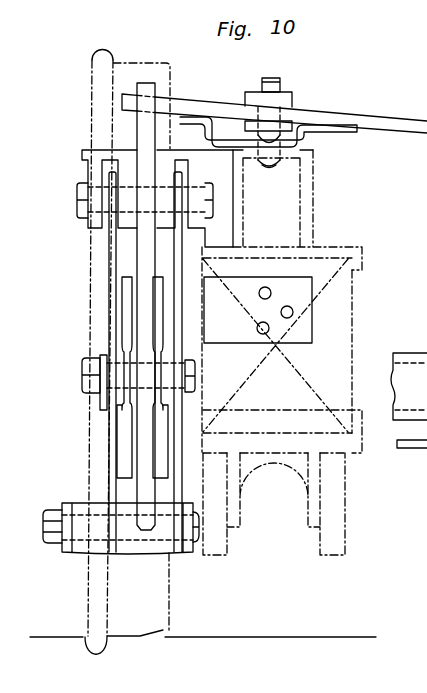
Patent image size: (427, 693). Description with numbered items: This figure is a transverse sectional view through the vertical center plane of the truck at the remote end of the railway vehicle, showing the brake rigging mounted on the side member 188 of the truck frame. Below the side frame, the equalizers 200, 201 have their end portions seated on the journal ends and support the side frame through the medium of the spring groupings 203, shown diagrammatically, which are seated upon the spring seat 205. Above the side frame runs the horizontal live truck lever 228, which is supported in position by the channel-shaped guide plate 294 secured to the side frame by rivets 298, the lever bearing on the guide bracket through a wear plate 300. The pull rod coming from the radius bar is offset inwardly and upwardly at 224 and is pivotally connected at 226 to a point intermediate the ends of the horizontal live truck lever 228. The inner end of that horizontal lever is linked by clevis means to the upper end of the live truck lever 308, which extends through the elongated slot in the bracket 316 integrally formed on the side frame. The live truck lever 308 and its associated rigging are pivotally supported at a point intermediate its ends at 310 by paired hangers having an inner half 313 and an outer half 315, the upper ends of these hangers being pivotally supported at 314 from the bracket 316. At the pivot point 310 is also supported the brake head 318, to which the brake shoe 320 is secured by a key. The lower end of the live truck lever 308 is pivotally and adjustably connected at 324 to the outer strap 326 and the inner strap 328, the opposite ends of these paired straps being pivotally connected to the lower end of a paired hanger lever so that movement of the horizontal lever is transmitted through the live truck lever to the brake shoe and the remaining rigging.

The side member 188 is at (313, 190).
The equalizer 200 is at (340, 532).
The equalizer 201 is at (225, 548).
The spring grouping 203 is at (352, 303).
The spring seat 205 is at (357, 453).
The offset of pull rod 224 is at (288, 96).
The pivotal connection 226 is at (268, 97).
The horizontal live truck lever 228 is at (345, 111).
The channel-shaped guide plate 294 is at (328, 135).
The rivet 298 is at (270, 170).
The wear plate 300 is at (379, 146).
The live truck lever 308 is at (137, 118).
The pivot point 310 is at (82, 370).
The inner half of paired hangers 313 is at (107, 242).
The pivotal support 314 is at (82, 200).
The outer half of paired hangers 315 is at (178, 248).
The bracket 316 is at (82, 157).
The brake head 318 is at (103, 402).
The brake shoe 320 is at (118, 477).
The pivotal and adjustable connection 324 is at (53, 513).
The outer strap 326 is at (192, 555).
The inner strap 328 is at (65, 502).